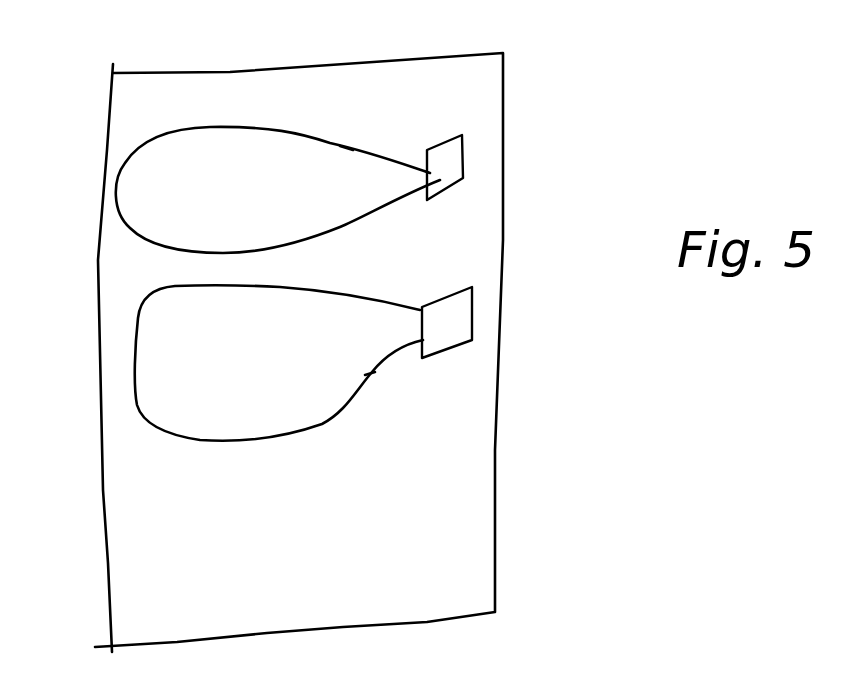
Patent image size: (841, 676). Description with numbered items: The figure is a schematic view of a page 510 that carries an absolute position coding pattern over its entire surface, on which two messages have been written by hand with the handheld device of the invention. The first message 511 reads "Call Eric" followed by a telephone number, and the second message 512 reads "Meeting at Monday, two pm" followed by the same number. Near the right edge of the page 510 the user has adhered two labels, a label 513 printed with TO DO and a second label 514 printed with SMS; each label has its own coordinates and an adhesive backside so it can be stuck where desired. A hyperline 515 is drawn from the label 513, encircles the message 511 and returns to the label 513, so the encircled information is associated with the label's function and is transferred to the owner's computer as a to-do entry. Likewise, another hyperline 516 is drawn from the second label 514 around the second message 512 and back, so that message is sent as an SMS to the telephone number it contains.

The page 510 is at (507, 63).
The message 511 is at (143, 172).
The second message 512 is at (140, 338).
The label 513 is at (465, 143).
The second label 514 is at (473, 297).
The hyperline 515 is at (353, 140).
The hyperline 516 is at (372, 372).